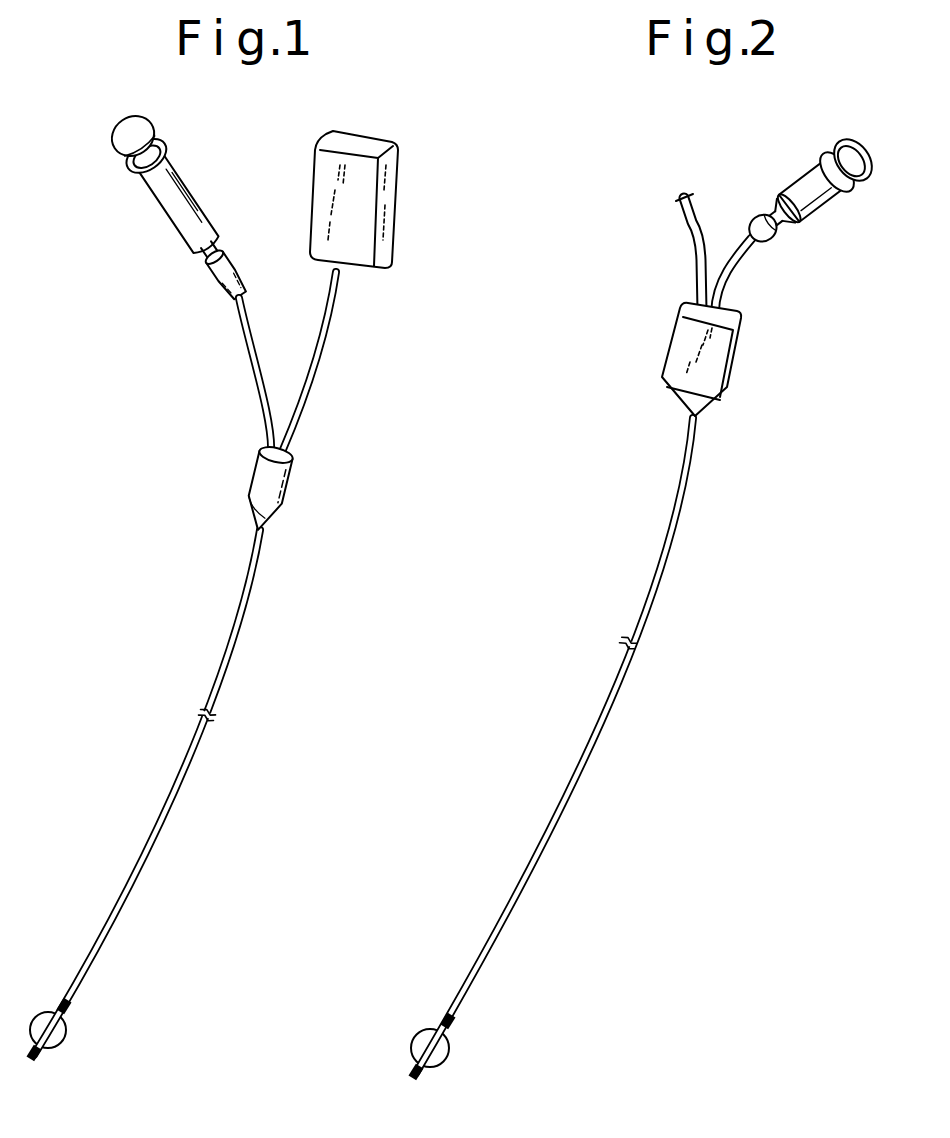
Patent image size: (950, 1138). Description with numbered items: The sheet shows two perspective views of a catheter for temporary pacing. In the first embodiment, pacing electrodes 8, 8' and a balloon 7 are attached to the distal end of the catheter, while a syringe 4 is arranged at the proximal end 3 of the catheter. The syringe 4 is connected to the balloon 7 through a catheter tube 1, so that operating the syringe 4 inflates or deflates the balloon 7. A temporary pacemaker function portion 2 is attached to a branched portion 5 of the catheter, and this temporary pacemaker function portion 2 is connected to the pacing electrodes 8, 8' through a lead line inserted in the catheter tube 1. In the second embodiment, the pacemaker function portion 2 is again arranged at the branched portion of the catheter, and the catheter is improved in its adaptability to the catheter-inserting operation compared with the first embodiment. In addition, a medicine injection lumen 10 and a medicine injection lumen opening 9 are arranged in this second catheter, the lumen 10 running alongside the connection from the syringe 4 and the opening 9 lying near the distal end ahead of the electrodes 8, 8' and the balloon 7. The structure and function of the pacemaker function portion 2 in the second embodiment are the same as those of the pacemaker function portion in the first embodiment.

In FIG. 1, the catheter tube 1 is at (229, 665).
In FIG. 1, the temporary pacemaker function portion 2 is at (398, 212).
In FIG. 2, the temporary pacemaker function portion 2 is at (738, 352).
In FIG. 1, the proximal end 3 is at (236, 268).
In FIG. 2, the proximal end 3 is at (773, 233).
In FIG. 1, the syringe 4 is at (160, 207).
In FIG. 2, the syringe 4 is at (807, 197).
In FIG. 1, the branched portion 5 is at (288, 485).
In FIG. 1, the balloon 7 is at (68, 1035).
In FIG. 2, the balloon 7 is at (450, 1050).
In FIG. 1, the pacing electrode 8 is at (50, 1067).
In FIG. 2, the pacing electrode 8 is at (438, 1081).
In FIG. 1, the pacing electrode 8' is at (88, 1006).
In FIG. 2, the pacing electrode 8' is at (475, 1011).
In FIG. 2, the medicine injection lumen opening 9 is at (499, 937).
In FIG. 2, the medicine injection lumen 10 is at (682, 195).